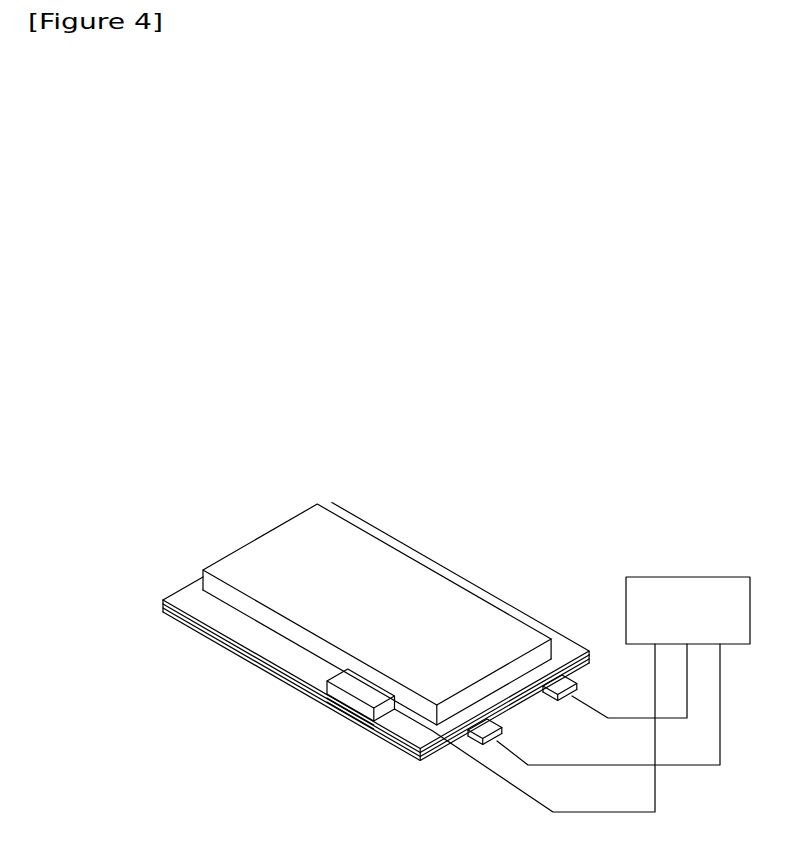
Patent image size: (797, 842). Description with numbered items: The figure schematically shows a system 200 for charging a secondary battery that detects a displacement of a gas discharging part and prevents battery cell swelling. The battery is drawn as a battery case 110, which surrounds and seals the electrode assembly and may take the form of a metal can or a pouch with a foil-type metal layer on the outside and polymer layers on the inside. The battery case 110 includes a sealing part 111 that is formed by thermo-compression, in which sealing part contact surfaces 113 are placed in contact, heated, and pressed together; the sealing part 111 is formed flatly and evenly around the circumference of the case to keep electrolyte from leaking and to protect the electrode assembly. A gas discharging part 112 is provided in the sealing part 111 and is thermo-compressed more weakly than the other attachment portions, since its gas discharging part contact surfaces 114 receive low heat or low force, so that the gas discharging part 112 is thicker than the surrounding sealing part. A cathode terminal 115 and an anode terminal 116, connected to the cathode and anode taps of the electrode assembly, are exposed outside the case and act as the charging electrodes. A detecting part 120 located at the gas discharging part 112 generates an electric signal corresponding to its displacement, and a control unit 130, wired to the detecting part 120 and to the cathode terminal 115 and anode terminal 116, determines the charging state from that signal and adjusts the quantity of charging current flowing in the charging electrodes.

The system for charging a secondary battery 200 is at (433, 444).
The battery case 110 is at (441, 587).
The sealing part 111 is at (188, 600).
The gas discharging part 112 is at (327, 688).
The sealing part contact surfaces 113 is at (190, 627).
The gas discharging part contact surfaces 114 is at (338, 720).
The cathode terminal 115 is at (494, 733).
The anode terminal 116 is at (575, 681).
The detecting part 120 is at (367, 722).
The control unit 130 is at (685, 577).